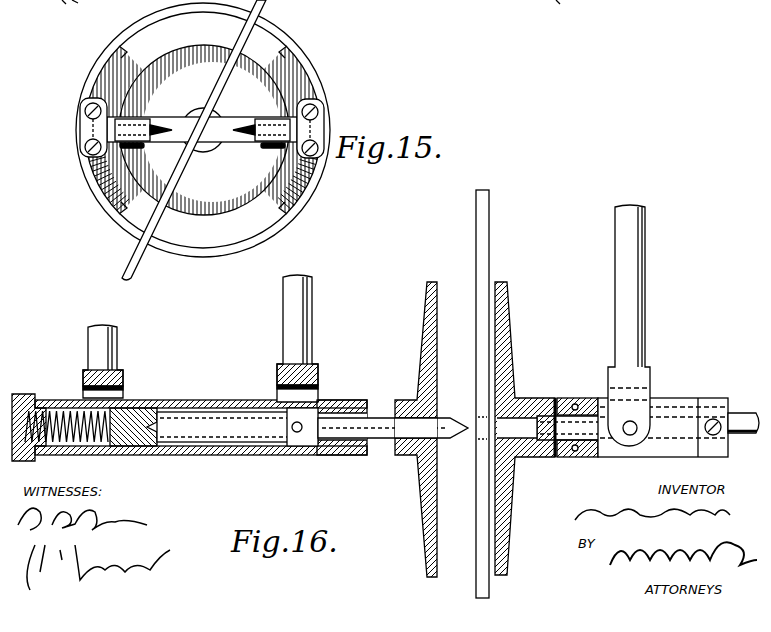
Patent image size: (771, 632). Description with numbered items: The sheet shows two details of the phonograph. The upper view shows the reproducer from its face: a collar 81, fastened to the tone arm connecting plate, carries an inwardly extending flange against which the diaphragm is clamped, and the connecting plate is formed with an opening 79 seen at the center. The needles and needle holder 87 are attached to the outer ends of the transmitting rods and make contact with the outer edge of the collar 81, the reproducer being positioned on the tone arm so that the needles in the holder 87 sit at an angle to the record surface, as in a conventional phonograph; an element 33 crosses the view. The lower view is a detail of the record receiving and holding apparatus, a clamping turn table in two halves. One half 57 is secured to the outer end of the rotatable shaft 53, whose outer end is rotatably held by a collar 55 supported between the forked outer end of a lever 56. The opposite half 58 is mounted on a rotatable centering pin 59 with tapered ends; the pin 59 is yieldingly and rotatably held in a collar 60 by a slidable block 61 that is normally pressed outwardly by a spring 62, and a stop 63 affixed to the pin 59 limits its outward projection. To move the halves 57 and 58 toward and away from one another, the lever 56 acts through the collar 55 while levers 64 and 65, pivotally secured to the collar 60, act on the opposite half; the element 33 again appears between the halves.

In FIG. 15, the rod 33 is at (250, 27).
In FIG. 16, the rod 33 is at (488, 240).
In FIG. 15, the collar 81 is at (303, 62).
In FIG. 15, the opening 79 is at (202, 150).
In FIG. 15, the needle holder 87 is at (150, 125).
In FIG. 16, the rotatable shaft 53 is at (735, 415).
In FIG. 16, the collar 55 is at (668, 406).
In FIG. 16, the lever 56 is at (630, 278).
In FIG. 16, the half of the clamping turn table 57 is at (510, 350).
In FIG. 16, the opposite half of the clamping turn table 58 is at (438, 293).
In FIG. 16, the centering pin 59 is at (368, 424).
In FIG. 16, the collar 60 is at (178, 411).
In FIG. 16, the slidable block 61 is at (136, 409).
In FIG. 16, the spring 62 is at (44, 400).
In FIG. 16, the stop 63 is at (297, 446).
In FIG. 16, the lever 64 is at (106, 339).
In FIG. 16, the lever 65 is at (298, 314).